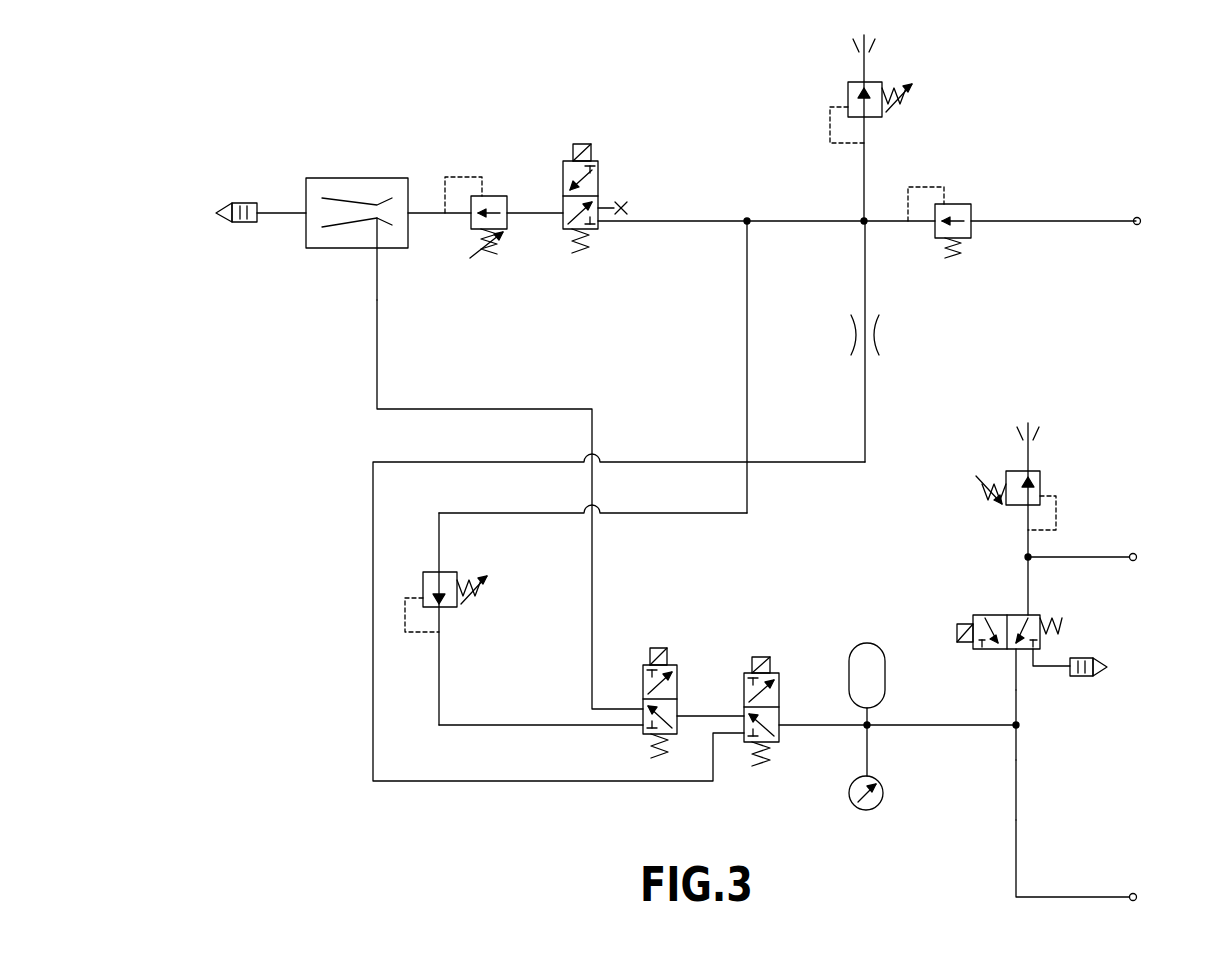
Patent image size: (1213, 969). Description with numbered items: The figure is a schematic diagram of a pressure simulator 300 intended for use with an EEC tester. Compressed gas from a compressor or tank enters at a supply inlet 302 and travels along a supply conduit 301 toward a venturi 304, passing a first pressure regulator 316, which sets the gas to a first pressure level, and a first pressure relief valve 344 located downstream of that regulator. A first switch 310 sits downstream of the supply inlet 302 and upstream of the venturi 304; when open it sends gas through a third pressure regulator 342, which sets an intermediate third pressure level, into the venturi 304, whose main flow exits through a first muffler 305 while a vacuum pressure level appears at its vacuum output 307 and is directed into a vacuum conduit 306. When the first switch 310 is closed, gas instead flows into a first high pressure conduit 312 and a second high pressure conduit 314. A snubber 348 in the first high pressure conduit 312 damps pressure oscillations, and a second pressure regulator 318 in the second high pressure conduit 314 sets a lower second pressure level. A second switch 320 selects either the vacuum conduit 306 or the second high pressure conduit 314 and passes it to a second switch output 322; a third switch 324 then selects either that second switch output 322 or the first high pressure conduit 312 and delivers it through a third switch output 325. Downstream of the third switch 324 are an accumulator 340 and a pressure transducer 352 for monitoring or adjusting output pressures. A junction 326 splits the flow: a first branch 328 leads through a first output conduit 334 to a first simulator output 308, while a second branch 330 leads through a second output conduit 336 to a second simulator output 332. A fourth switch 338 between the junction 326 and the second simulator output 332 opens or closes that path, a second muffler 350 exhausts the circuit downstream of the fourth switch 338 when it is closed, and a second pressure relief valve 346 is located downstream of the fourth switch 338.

The pressure simulator 300 is at (262, 110).
The supply conduit 301 is at (1065, 221).
The supply inlet 302 is at (1139, 218).
The venturi 304 is at (340, 178).
The first muffler 305 is at (224, 222).
The vacuum conduit 306 is at (377, 326).
The vacuum output 307 is at (377, 259).
The first simulator output 308 is at (1136, 894).
The first switch 310 is at (598, 162).
The first high pressure conduit 312 is at (865, 464).
The second high pressure conduit 314 is at (748, 515).
The first pressure regulator 316 is at (964, 204).
The second pressure regulator 318 is at (452, 572).
The second switch 320 is at (668, 665).
The second switch output 322 is at (700, 716).
The third switch 324 is at (775, 673).
The third switch output 325 is at (810, 726).
The junction 326 is at (1016, 725).
The first branch 328 is at (1016, 788).
The second branch 330 is at (1016, 698).
The second simulator output 332 is at (1136, 555).
The first output conduit 334 is at (1016, 840).
The second output conduit 336 is at (1016, 677).
The fourth switch 338 is at (1040, 615).
The accumulator 340 is at (872, 643).
The third pressure regulator 342 is at (484, 196).
The first pressure relief valve 344 is at (868, 82).
The second pressure relief valve 346 is at (1033, 471).
The snubber 348 is at (880, 334).
The second muffler 350 is at (1108, 667).
The pressure transducer 352 is at (862, 811).